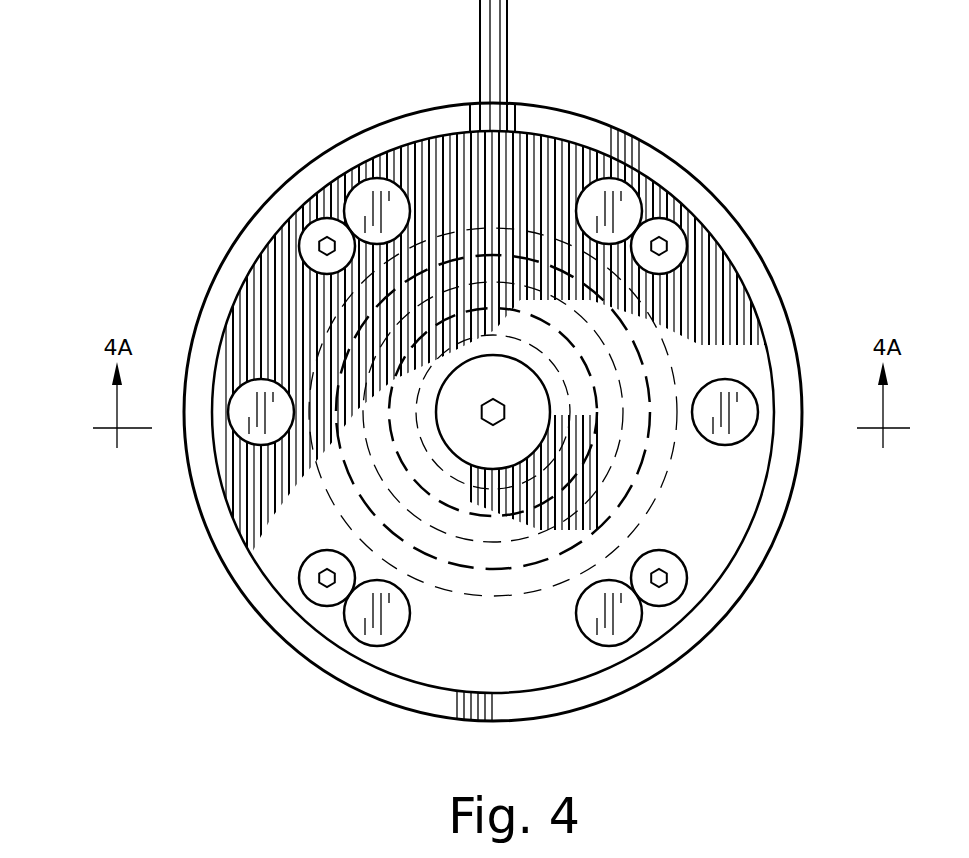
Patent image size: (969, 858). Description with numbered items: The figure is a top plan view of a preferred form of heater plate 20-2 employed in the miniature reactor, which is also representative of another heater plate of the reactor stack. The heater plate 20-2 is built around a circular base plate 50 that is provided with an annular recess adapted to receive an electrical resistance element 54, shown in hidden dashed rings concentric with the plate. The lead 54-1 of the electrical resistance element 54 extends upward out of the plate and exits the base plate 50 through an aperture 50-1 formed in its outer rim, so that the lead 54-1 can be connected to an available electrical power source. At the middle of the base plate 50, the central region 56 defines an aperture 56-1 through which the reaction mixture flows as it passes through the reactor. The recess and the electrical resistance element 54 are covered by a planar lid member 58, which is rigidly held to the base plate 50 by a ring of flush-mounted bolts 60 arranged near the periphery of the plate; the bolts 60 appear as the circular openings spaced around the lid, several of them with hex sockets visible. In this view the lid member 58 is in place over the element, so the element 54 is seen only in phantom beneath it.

The heater plate 20-2 is at (150, 640).
The base plate 50 is at (757, 545).
The aperture 50-1 is at (510, 118).
The electrical resistance element 54 is at (491, 572).
The lead 54-1 is at (490, 40).
The central region 56 is at (518, 460).
The aperture 56-1 is at (517, 378).
The planar lid member 58 is at (713, 517).
The flush-mounted bolts 60 is at (323, 232).